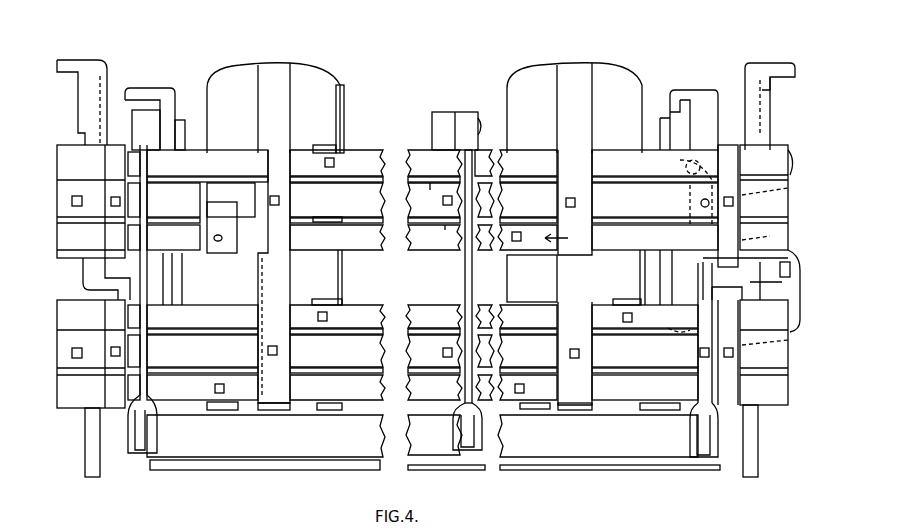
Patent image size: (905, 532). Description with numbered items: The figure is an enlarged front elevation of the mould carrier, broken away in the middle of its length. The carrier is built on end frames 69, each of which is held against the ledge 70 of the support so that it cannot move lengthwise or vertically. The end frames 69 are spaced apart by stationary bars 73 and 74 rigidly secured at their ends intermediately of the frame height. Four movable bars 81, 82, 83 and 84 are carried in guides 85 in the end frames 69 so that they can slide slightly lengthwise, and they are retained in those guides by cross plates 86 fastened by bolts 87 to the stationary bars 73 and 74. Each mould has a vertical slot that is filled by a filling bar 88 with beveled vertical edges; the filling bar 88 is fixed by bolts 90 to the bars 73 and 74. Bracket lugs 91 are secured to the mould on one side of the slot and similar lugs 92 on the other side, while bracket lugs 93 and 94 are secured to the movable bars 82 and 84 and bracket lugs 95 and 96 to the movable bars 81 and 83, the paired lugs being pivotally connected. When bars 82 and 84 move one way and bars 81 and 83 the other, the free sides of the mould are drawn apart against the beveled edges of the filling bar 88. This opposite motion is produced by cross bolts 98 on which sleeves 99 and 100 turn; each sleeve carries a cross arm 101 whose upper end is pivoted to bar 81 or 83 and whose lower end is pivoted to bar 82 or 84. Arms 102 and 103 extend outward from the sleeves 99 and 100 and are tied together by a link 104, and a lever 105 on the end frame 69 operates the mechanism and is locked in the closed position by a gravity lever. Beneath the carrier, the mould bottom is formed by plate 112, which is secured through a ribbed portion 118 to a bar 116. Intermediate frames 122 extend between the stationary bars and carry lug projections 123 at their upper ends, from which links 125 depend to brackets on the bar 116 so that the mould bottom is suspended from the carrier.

The end frame 69 is at (87, 90).
The ledge 70 is at (58, 60).
The intermediate frame 122 is at (186, 75).
The filling bar 88 is at (276, 72).
The guide 85 is at (113, 420).
The bracket lug 95 is at (342, 148).
The bar 81 is at (368, 160).
The bracket lug 91 is at (240, 190).
The bolt 90 is at (292, 183).
The bar 73 is at (266, 203).
The bar 82 is at (266, 233).
The bracket lug 93 is at (223, 246).
The lug 92 is at (289, 328).
The bracket lug 96 is at (328, 298).
The bar 83 is at (266, 319).
The bar 74 is at (266, 354).
The bar 84 is at (291, 390).
The bolt 87 is at (120, 352).
The ribbed portion 118 is at (165, 466).
The bracket lug 94 is at (227, 412).
The plate 112 is at (305, 468).
The bar 116 is at (584, 440).
The lug projection 123 is at (441, 118).
The link 125 is at (468, 285).
The cross arm 101 is at (683, 177).
The cross plate 86 is at (735, 176).
The cross bolt 98 is at (698, 202).
The sleeve 100 is at (677, 237).
The arm 102 is at (761, 238).
The lever 105 is at (712, 266).
The link 104 is at (765, 281).
The sleeve 99 is at (666, 388).
The arm 103 is at (756, 352).